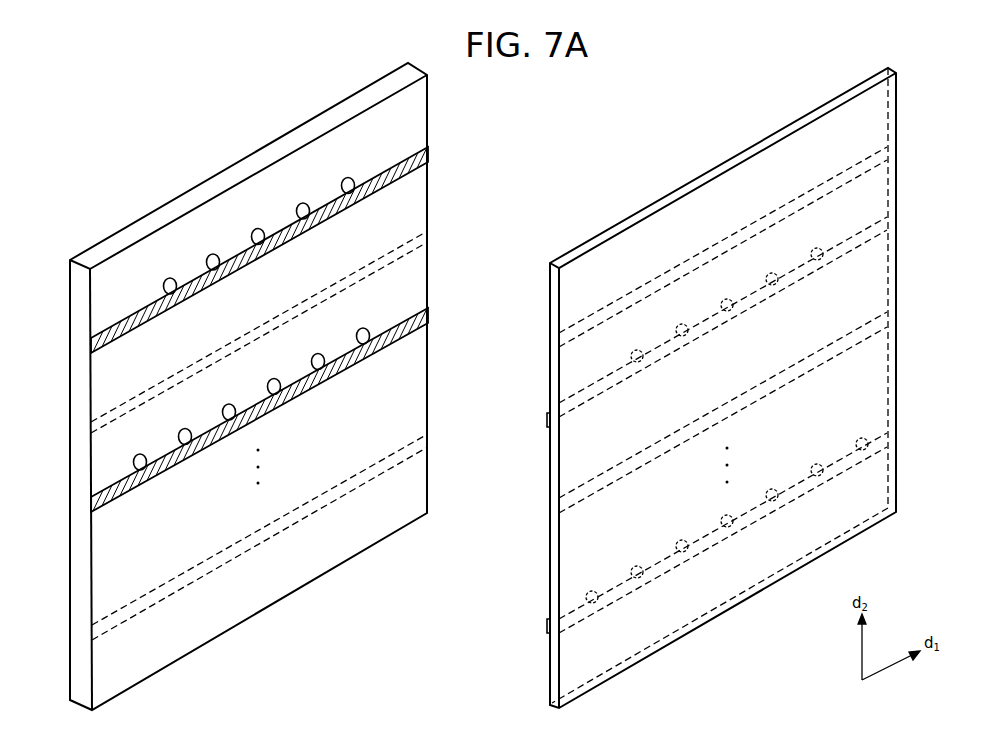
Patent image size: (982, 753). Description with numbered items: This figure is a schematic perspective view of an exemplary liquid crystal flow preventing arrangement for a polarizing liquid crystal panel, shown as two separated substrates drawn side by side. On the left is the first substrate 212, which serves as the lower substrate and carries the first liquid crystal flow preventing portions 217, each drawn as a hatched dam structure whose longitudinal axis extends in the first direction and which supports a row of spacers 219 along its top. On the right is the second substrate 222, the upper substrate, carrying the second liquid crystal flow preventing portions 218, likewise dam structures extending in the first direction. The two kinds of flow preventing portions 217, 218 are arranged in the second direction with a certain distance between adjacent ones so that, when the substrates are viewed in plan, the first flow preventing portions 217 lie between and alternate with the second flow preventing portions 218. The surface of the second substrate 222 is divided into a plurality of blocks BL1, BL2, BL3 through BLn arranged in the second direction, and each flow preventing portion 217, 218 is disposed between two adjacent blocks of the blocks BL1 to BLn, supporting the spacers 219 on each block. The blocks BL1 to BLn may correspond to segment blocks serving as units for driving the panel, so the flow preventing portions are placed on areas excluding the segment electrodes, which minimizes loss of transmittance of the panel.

The first substrate 212 is at (375, 120).
The first liquid crystal flow preventing portion 217 is at (91, 347).
The spacer 219 is at (172, 281).
The second substrate 222 is at (717, 192).
The second liquid crystal flow preventing portion 218 is at (886, 227).
The block BL1 is at (563, 308).
The block BL2 is at (563, 385).
The block BL3 is at (563, 463).
The block BLn is at (565, 670).